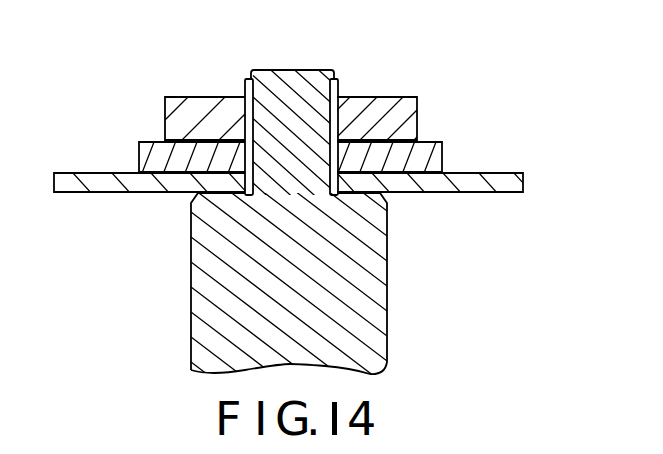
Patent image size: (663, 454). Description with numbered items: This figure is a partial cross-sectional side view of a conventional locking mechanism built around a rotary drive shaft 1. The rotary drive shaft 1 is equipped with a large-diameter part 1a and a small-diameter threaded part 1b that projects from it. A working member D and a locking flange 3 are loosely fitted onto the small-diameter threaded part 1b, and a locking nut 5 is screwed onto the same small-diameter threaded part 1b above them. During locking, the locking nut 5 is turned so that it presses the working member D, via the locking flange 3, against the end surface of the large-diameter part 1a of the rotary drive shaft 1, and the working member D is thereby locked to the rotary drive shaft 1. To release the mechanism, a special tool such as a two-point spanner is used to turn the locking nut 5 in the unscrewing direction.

The rotary drive shaft 1 is at (278, 232).
The large-diameter part 1a is at (199, 299).
The small-diameter threaded part 1b is at (294, 137).
The locking flange 3 is at (142, 157).
The locking nut 5 is at (206, 108).
The working member D is at (100, 183).